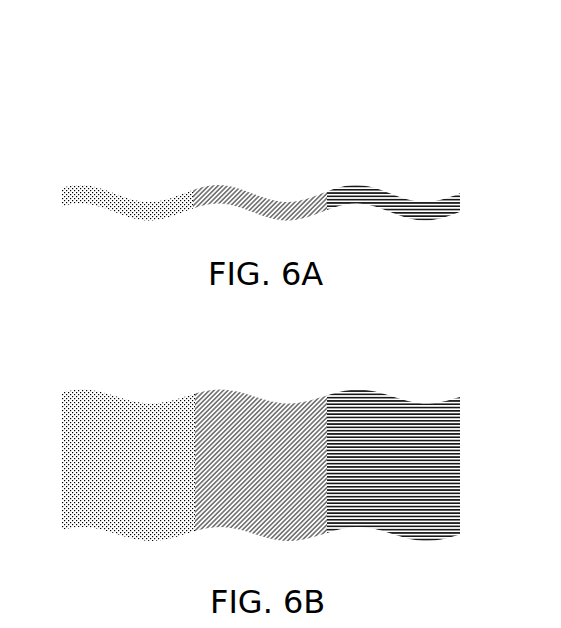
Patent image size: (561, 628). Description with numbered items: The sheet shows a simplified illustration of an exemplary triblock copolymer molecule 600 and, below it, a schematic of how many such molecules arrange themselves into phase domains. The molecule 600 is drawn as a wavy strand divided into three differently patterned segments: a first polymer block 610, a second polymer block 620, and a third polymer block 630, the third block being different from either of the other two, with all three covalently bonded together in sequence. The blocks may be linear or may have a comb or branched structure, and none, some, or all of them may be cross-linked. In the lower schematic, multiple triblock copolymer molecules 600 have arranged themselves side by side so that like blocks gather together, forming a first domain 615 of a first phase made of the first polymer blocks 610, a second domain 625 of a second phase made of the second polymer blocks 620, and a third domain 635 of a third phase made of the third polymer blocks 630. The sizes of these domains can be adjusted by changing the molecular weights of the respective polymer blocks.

In FIG. 6A, the triblock copolymer molecule 600 is at (147, 121).
In FIG. 6A, the first polymer block 610 is at (148, 205).
In FIG. 6A, the second polymer block 620 is at (283, 205).
In FIG. 6A, the third polymer block 630 is at (405, 205).
In FIG. 6B, the first domain 615 is at (150, 468).
In FIG. 6B, the second domain 625 is at (273, 468).
In FIG. 6B, the third domain 635 is at (412, 470).